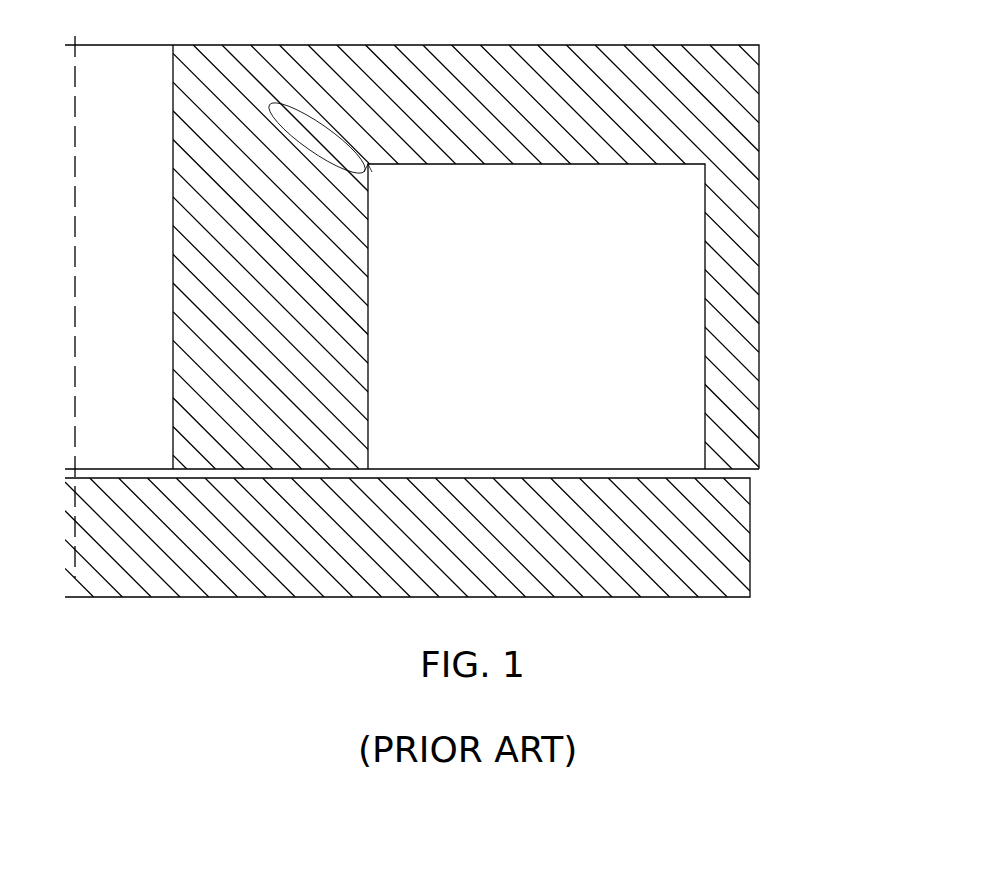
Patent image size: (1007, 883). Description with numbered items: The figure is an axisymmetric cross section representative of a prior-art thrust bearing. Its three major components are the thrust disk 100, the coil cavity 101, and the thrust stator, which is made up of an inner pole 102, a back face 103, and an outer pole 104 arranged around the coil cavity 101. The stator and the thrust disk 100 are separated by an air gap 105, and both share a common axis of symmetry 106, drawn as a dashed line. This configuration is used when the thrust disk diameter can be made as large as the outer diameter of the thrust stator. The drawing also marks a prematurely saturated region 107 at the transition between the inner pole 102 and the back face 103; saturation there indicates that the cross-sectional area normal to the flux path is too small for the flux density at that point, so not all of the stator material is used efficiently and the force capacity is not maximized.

The thrust disk 100 is at (707, 532).
The coil cavity 101 is at (565, 334).
The inner pole 102 is at (275, 365).
The back face 103 is at (522, 100).
The outer pole 104 is at (733, 420).
The air gap 105 is at (276, 472).
The axis of symmetry 106 is at (77, 289).
The prematurely saturated region 107 is at (383, 170).